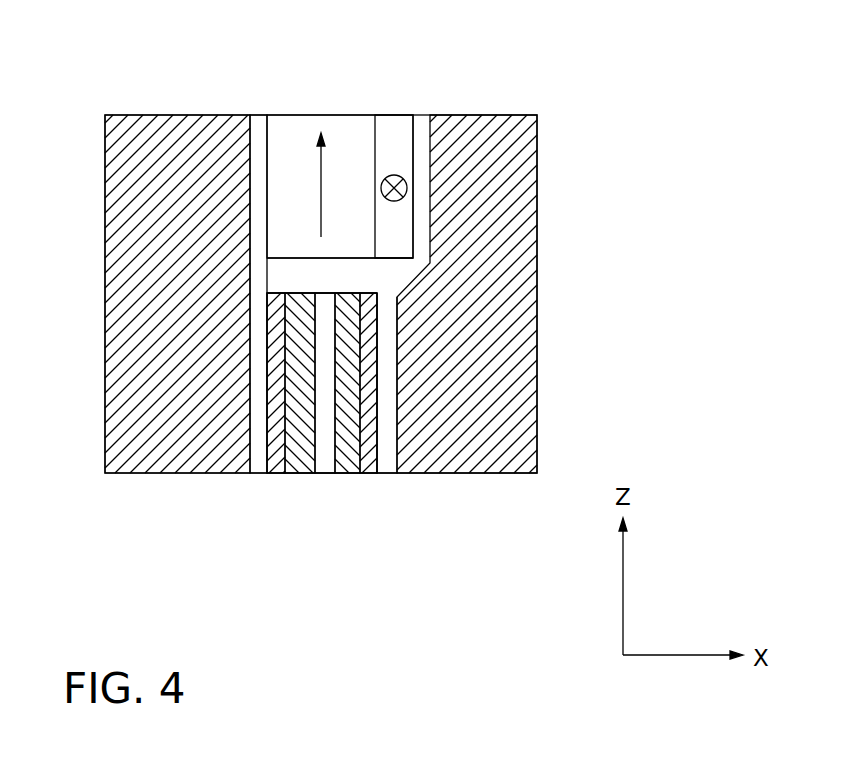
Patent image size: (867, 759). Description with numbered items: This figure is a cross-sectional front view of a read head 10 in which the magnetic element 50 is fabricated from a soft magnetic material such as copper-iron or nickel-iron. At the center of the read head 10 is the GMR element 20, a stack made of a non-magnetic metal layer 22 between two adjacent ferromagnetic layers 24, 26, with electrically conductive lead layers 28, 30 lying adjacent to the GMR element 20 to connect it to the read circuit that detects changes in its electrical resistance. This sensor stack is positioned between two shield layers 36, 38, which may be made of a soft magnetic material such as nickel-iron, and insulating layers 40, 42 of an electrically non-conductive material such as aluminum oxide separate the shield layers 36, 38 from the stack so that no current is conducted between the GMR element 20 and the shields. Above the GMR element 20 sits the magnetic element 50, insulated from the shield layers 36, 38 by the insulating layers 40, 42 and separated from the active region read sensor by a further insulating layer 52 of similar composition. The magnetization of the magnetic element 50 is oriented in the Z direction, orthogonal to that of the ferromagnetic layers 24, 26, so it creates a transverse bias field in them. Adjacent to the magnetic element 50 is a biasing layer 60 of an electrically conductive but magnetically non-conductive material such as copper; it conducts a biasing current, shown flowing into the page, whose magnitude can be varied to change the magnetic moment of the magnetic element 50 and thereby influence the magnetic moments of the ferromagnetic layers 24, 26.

The read head 10 is at (518, 83).
The GMR element 20 is at (288, 577).
The non-magnetic metal layer 22 is at (323, 474).
The ferromagnetic layer 24 is at (352, 474).
The ferromagnetic layer 26 is at (300, 474).
The electrically conductive lead layer 28 is at (373, 474).
The electrically conductive lead layer 30 is at (274, 474).
The shield layer 36 is at (525, 383).
The shield layer 38 is at (122, 381).
The insulating layer 40 is at (390, 474).
The insulating layer 42 is at (256, 474).
The magnetic element 50 is at (332, 130).
The insulating layer 52 is at (272, 275).
The biasing layer 60 is at (394, 132).